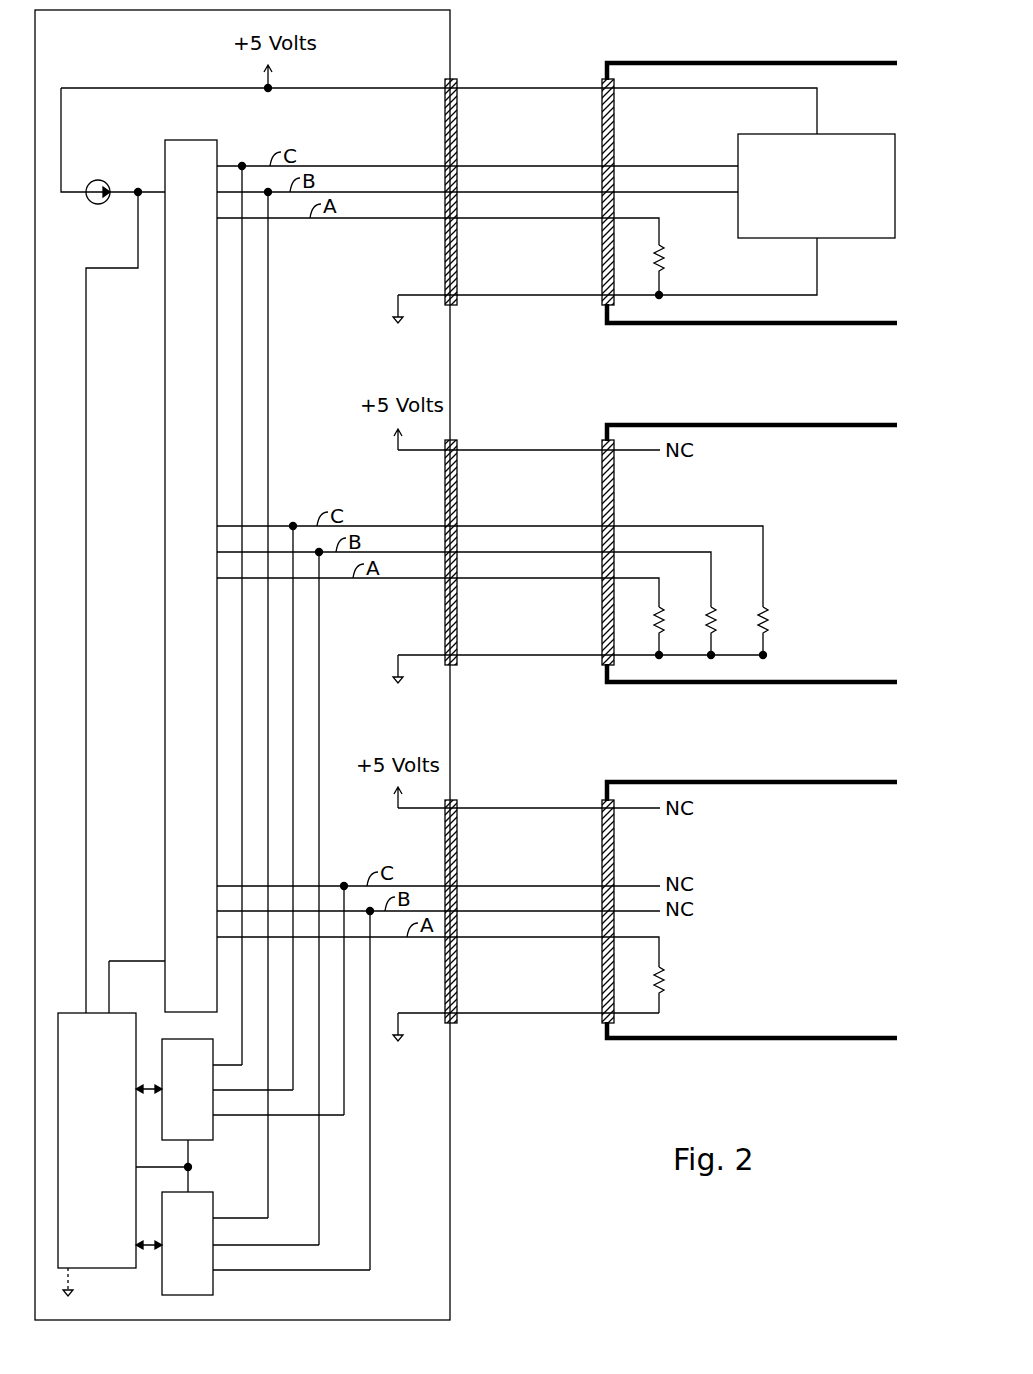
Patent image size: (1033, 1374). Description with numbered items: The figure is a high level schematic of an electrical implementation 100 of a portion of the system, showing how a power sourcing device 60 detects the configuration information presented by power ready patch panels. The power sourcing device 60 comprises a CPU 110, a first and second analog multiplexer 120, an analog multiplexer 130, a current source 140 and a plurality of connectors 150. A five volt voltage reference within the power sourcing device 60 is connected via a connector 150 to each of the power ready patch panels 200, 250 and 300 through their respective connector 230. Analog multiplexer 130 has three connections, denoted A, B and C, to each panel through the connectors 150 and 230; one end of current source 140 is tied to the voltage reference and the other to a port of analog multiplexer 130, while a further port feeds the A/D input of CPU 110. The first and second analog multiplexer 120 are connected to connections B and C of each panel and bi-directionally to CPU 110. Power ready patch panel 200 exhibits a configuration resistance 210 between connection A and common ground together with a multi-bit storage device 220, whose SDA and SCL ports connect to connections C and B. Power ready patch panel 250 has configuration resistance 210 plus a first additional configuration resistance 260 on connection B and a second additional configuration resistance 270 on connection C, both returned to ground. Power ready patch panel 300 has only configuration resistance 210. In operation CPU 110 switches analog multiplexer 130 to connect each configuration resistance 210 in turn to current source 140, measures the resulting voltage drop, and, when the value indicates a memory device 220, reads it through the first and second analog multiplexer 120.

The power sourcing device 60 is at (450, 63).
The electrical implementation 100 is at (615, 31).
The CPU 110 is at (74, 1270).
The first and second analog multiplexer 120 is at (190, 1039).
The analog multiplexer 130 is at (165, 570).
The current source 140 is at (100, 181).
The connectors 150 is at (445, 140).
The power ready patch panel 200 is at (700, 63).
The configuration resistance 210 is at (664, 250).
The multi-bit storage device 220 is at (840, 134).
The connector 230 is at (614, 143).
The power ready patch panel 250 is at (703, 425).
The first additional configuration resistance 260 is at (716, 612).
The second additional configuration resistance 270 is at (768, 612).
The power ready patch panel 300 is at (703, 782).